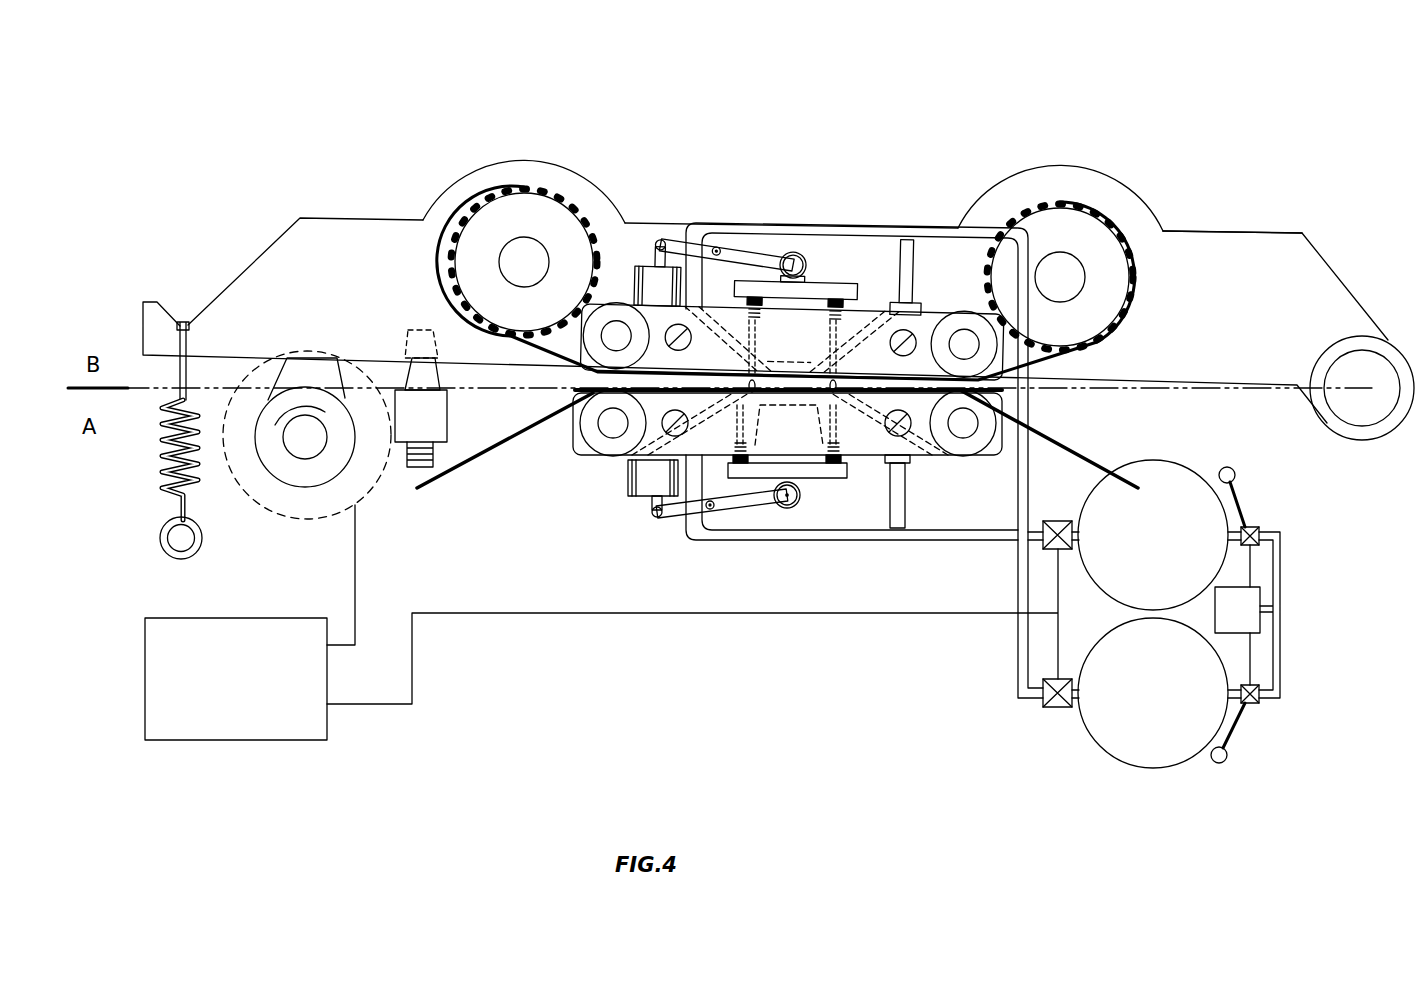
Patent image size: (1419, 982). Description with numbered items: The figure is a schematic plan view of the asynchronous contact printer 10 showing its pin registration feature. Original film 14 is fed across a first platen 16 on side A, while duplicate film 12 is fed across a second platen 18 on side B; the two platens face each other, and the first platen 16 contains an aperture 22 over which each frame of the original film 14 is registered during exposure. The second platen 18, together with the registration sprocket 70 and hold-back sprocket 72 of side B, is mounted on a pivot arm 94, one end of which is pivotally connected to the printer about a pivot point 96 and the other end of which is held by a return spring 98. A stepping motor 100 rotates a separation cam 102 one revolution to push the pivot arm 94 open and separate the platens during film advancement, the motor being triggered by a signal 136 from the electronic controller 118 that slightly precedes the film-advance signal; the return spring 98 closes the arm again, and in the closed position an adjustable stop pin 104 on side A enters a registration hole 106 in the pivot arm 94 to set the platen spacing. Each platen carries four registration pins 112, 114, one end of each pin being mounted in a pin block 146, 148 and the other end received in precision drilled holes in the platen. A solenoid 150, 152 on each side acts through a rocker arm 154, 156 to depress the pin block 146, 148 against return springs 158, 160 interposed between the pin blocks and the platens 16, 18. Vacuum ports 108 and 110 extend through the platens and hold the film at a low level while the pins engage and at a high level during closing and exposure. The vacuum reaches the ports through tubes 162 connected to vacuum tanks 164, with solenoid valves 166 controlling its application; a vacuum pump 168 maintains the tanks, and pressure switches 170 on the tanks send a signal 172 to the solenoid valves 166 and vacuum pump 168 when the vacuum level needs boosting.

The asynchronous contact printer 10 is at (290, 152).
The duplicate film 12 is at (1053, 357).
The original film 14 is at (1035, 433).
The first platen 16 is at (982, 457).
The second platen 18 is at (925, 312).
The aperture 22 is at (800, 408).
The registration sprocket 70 is at (455, 270).
The hold-back sprocket 72 is at (1125, 262).
The pivot arm 94 is at (1237, 233).
The pivot point 96 is at (1368, 365).
The return spring 98 is at (170, 442).
The stepping motor 100 is at (320, 518).
The separation cam 102 is at (285, 375).
The stop pin 104 is at (447, 373).
The registration hole 106 is at (408, 333).
The vacuum ports 108 is at (880, 500).
The vacuum ports 110 is at (875, 303).
The registration pins 112 is at (632, 463).
The registration pins 114 is at (790, 252).
The electronic controller 118 is at (143, 690).
The signal 136 is at (355, 585).
The pin block 146 is at (742, 478).
The pin block 148 is at (817, 283).
The solenoid 150 is at (628, 490).
The solenoid 152 is at (632, 285).
The rocker arm 154 is at (667, 520).
The rocker arm 156 is at (757, 250).
The return spring 158 is at (853, 470).
The return spring 160 is at (837, 317).
The tubes 162 is at (907, 273).
The vacuum tanks 164 is at (1150, 462).
The solenoid valves 166 is at (1058, 521).
The vacuum pump 168 is at (1262, 590).
The pressure switches 170 is at (1258, 527).
The signal 172 is at (1241, 505).